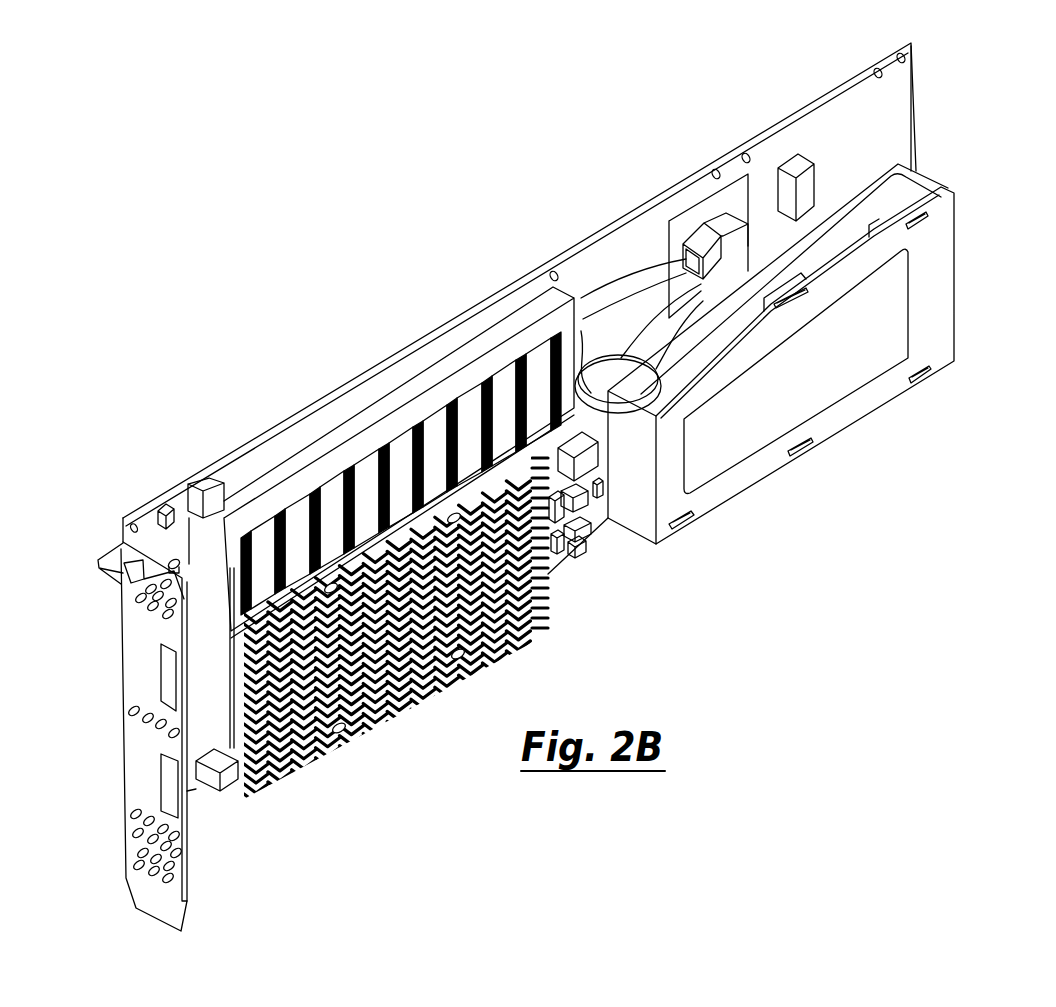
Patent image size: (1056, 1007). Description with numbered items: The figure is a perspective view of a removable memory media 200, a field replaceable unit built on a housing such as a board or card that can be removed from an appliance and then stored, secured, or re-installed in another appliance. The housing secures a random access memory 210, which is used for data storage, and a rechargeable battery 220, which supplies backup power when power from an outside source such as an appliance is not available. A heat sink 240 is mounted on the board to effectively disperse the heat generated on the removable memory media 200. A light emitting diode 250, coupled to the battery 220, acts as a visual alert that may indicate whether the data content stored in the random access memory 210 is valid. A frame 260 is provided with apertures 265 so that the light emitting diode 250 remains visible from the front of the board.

The removable memory media 200 is at (298, 362).
The random access memory 210 is at (365, 483).
The rechargeable battery 220 is at (880, 328).
The heat sink 240 is at (547, 608).
The light emitting diode 250 is at (178, 565).
The frame 260 is at (148, 883).
The apertures 265 is at (152, 598).